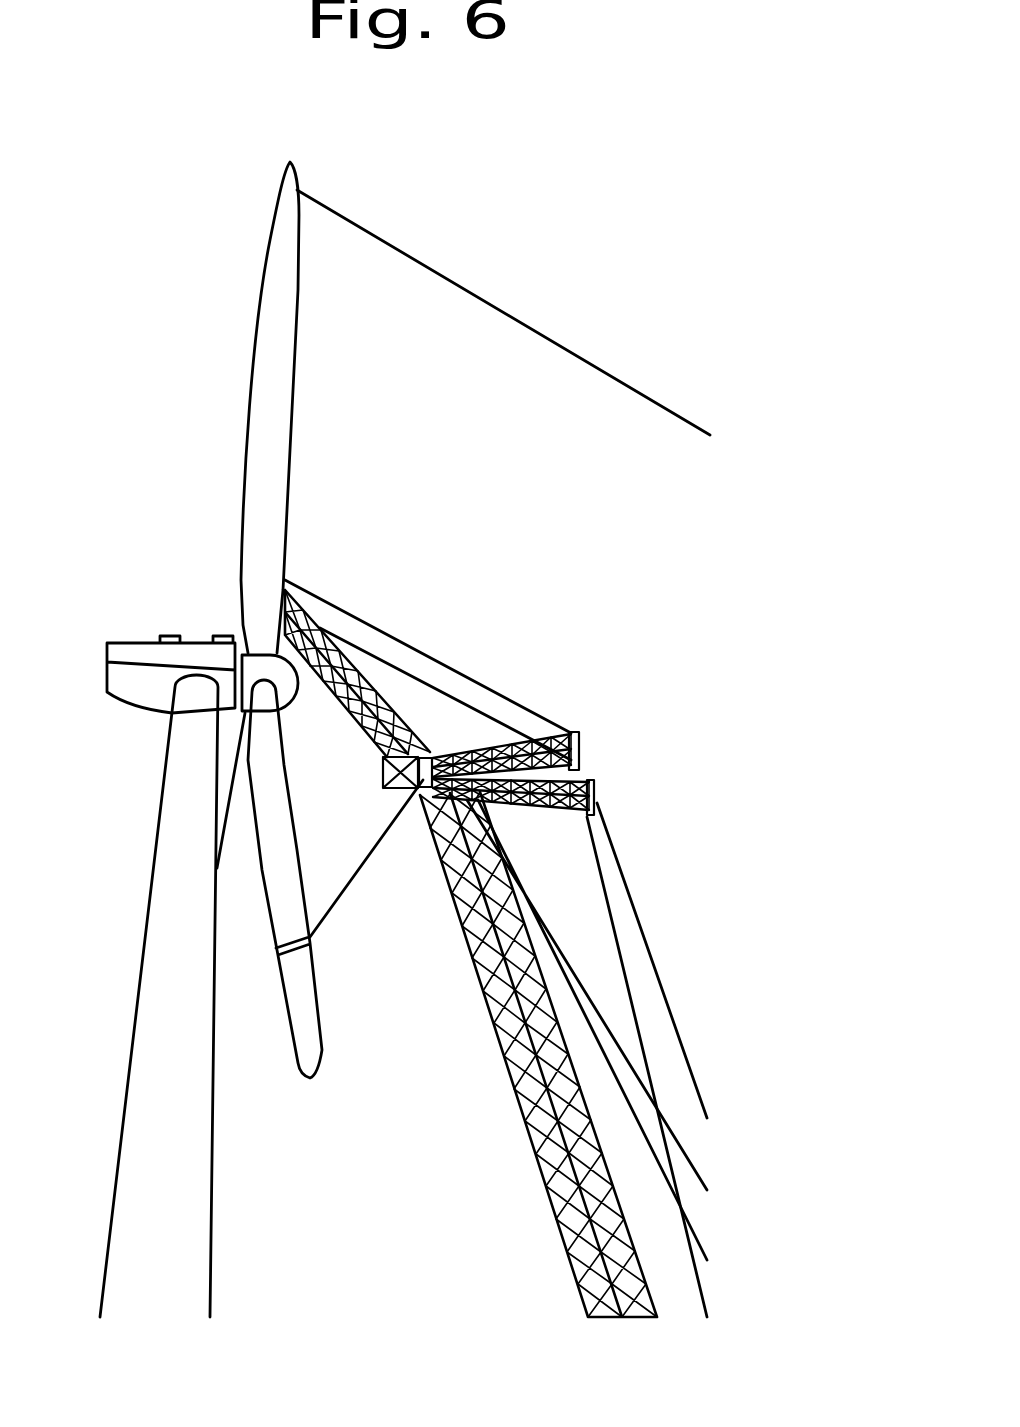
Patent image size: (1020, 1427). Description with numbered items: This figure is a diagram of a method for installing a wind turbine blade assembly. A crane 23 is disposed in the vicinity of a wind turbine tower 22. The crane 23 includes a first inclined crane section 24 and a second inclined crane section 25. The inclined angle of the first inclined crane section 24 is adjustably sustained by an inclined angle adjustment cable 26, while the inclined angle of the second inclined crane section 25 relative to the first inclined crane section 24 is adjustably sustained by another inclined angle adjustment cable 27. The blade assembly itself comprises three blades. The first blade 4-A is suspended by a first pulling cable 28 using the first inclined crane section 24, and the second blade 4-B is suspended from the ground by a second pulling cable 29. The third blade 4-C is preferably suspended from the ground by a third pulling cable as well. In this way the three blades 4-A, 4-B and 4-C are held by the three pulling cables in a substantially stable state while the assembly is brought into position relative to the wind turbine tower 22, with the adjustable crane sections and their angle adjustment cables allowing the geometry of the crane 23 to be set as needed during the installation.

The first blade 4-A is at (307, 1003).
The second blade 4-B is at (278, 452).
The third blade 4-C is at (237, 760).
The wind turbine tower 22 is at (128, 1090).
The crane 23 is at (464, 1072).
The first inclined crane section 24 is at (520, 1117).
The second inclined crane section 25 is at (368, 680).
The inclined angle adjustment cable 26 is at (563, 968).
The inclined angle adjustment cable 27 is at (523, 705).
The first pulling cable 28 is at (358, 878).
The second pulling cable 29 is at (523, 330).